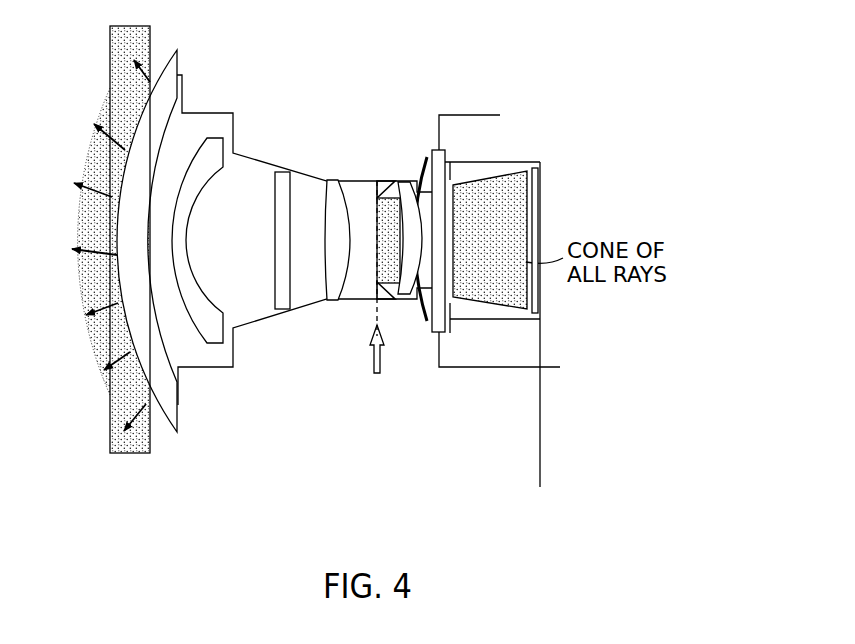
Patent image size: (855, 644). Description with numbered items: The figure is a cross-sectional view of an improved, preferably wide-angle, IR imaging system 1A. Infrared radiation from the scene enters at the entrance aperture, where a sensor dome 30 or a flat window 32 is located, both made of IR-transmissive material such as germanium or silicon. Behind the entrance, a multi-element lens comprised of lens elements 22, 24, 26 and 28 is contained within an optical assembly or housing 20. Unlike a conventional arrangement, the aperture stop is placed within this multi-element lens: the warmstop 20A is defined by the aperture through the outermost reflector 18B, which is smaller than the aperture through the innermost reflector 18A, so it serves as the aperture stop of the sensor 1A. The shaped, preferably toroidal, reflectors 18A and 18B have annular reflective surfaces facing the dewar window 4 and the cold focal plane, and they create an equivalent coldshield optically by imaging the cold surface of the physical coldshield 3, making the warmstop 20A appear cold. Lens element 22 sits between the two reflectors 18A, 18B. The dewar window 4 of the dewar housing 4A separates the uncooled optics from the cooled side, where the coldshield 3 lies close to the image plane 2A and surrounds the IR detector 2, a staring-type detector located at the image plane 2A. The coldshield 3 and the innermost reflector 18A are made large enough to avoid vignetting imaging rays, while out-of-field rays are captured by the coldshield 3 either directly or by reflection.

The IR imaging system 1A is at (633, 189).
The IR detector 2 is at (540, 221).
The image plane 2A is at (539, 458).
The coldshield 3 is at (514, 161).
The dewar window 4 is at (440, 150).
The dewar housing 4A is at (162, 449).
The innermost reflector 18A is at (424, 153).
The outermost reflector 18B is at (379, 181).
The housing 20 is at (262, 330).
The warmstop 20A is at (359, 295).
The lens element 22 is at (414, 183).
The lens element 24 is at (329, 179).
The lens element 26 is at (279, 170).
The lens element 28 is at (231, 142).
The sensor dome 30 is at (178, 62).
The flat window 32 is at (151, 31).